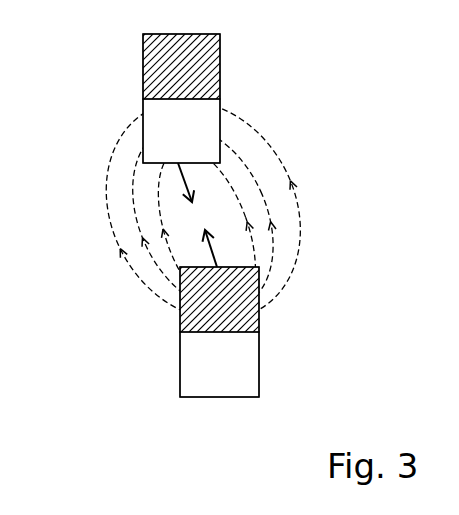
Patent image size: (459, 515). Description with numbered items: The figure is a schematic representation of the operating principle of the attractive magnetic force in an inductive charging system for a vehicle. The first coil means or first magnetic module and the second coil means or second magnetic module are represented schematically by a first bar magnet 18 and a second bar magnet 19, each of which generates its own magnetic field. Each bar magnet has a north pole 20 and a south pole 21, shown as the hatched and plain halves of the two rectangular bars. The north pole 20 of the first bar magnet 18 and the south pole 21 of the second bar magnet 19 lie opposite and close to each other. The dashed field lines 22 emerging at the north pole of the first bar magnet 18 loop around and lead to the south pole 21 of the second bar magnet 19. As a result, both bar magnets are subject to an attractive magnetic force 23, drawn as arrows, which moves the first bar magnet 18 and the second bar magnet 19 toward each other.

The first bar magnet 18 is at (259, 387).
The second bar magnet 19 is at (143, 53).
The north pole 20 is at (220, 70).
The south pole 21 is at (150, 113).
The field lines 22 is at (108, 193).
The attractive magnetic force 23 is at (188, 182).